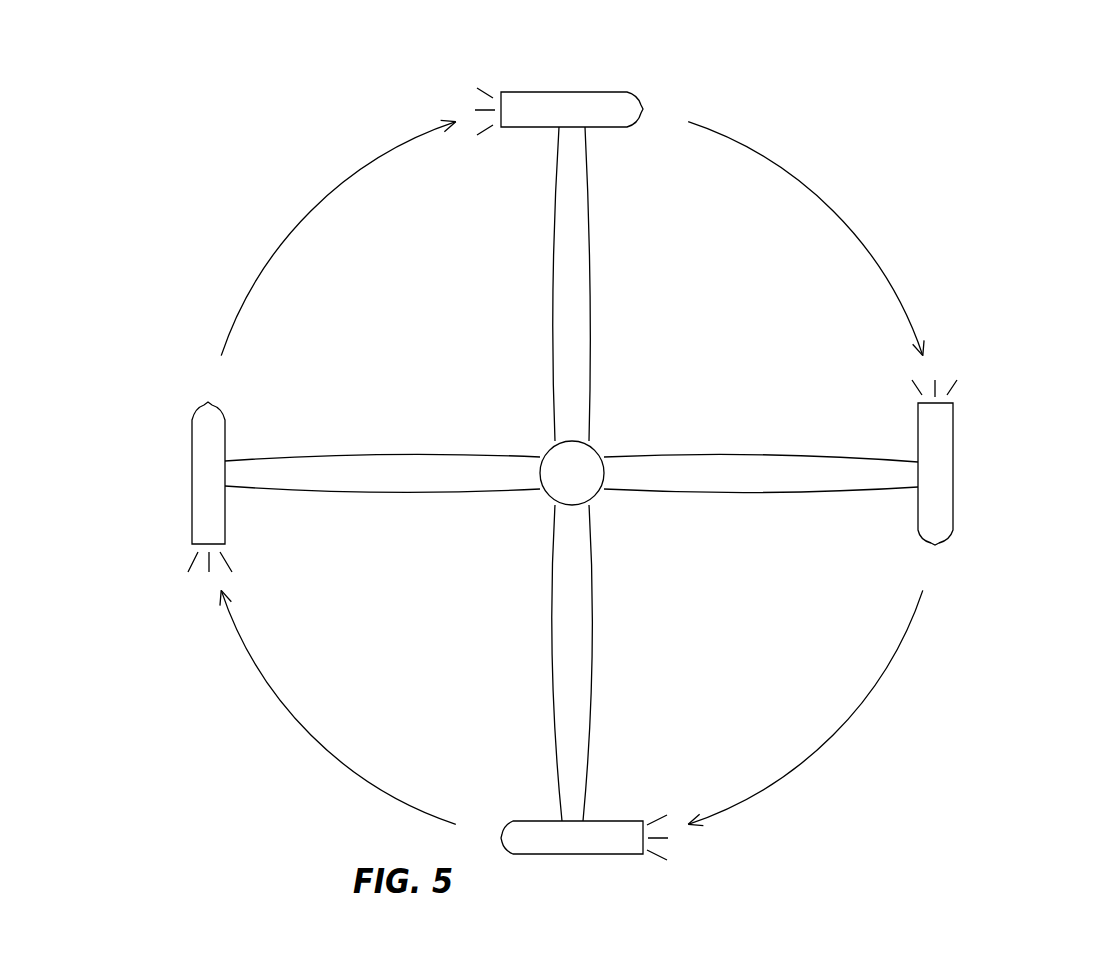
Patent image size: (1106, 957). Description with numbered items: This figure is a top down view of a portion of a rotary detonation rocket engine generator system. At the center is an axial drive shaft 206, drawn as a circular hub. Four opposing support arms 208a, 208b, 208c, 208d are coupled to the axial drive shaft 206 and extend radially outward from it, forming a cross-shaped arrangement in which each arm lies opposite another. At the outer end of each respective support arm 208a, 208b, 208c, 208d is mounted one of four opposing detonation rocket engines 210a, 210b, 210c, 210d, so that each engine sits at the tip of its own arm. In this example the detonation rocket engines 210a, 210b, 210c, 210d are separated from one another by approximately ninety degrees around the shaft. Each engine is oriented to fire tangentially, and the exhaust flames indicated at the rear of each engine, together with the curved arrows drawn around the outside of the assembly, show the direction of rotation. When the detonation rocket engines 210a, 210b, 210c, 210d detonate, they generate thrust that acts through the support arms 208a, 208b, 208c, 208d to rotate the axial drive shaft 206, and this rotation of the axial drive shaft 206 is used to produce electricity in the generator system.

The axial drive shaft 206 is at (585, 465).
The support arm 208a is at (765, 482).
The support arm 208b is at (575, 637).
The support arm 208c is at (423, 480).
The support arm 208d is at (568, 322).
The detonation rocket engine 210a is at (935, 472).
The detonation rocket engine 210b is at (578, 840).
The detonation rocket engine 210c is at (210, 490).
The detonation rocket engine 210d is at (570, 105).